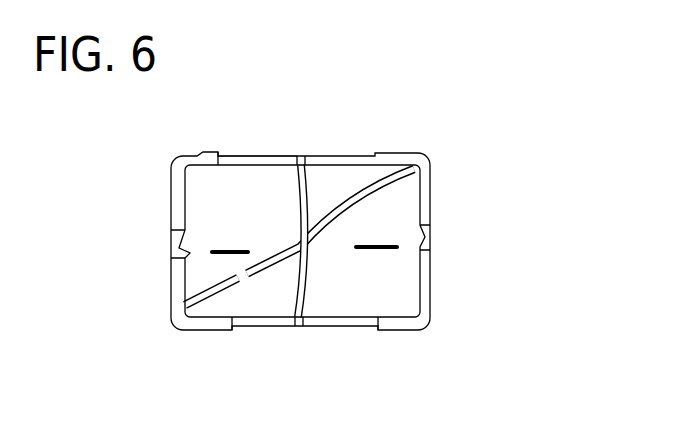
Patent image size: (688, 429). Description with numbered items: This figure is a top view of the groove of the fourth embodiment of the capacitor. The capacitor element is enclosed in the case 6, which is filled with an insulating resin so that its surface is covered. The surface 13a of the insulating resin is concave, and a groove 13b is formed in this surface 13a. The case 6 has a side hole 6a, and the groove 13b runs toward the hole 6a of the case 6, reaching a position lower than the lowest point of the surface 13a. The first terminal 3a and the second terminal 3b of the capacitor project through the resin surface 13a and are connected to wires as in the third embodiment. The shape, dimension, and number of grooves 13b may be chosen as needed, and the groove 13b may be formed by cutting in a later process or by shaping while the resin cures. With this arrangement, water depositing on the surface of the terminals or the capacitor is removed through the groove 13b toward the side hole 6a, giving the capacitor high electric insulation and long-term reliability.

The case 6 is at (397, 327).
The side hole 6a is at (298, 156).
The surface of the insulating resin 13a is at (233, 192).
The groove 13b is at (304, 210).
The first terminal 3a is at (215, 256).
The second terminal 3b is at (379, 249).